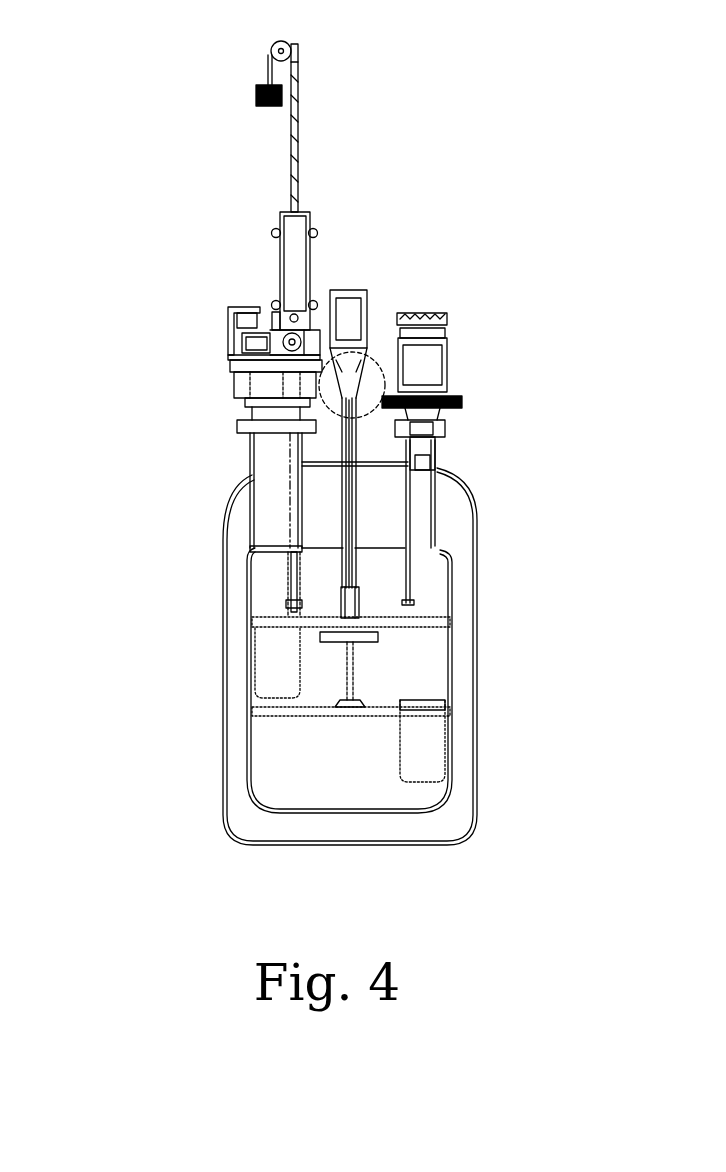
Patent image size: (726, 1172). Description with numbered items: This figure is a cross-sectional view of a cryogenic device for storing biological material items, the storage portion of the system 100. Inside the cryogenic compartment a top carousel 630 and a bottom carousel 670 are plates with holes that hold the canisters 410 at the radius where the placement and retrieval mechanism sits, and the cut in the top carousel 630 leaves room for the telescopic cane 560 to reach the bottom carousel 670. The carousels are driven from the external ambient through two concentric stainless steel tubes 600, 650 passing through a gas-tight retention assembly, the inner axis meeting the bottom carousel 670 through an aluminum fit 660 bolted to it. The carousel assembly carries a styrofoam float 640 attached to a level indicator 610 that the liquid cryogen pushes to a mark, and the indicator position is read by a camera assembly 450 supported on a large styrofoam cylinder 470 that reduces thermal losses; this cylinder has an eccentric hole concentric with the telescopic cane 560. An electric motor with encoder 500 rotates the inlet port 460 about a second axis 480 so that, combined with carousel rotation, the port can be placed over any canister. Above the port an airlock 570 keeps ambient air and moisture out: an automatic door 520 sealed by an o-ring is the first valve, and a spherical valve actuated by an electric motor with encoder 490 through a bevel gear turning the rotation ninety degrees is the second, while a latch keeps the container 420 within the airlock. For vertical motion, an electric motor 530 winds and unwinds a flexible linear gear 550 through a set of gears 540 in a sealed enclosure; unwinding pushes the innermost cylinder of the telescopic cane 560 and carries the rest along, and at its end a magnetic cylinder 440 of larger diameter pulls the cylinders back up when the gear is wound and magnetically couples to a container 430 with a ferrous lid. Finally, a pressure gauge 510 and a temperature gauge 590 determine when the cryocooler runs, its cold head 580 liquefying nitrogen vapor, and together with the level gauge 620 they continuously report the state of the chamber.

The system 100 is at (97, 152).
The canisters 410 is at (275, 670).
The container 420 is at (290, 604).
The container 430 is at (288, 590).
The magnetic cylinder 440 is at (295, 582).
The camera assembly 450 is at (285, 553).
The inlet port 460 is at (292, 520).
The large styrofoam cylinder 470 is at (255, 470).
The second axis 480 is at (232, 387).
The electric motor with encoder 490 is at (255, 345).
The electric motor with encoder 500 is at (230, 318).
The pressure gauge 510 is at (260, 313).
The automatic door 520 is at (290, 255).
The electric motor 530 is at (253, 102).
The set of gears 540 is at (270, 50).
The flexible linear gear 550 is at (296, 78).
The telescopic cane 560 is at (298, 140).
The airlock 570 is at (312, 262).
The cold head 580 is at (420, 446).
The temperature gauge 590 is at (423, 468).
The concentric stainless steel tube 600 is at (352, 563).
The level indicator 610 is at (358, 602).
The level gauge 620 is at (412, 602).
The top carousel 630 is at (453, 626).
The float 640 is at (377, 638).
The concentric stainless steel tube 650 is at (352, 673).
The aluminum fit 660 is at (349, 706).
The bottom carousel 670 is at (445, 713).